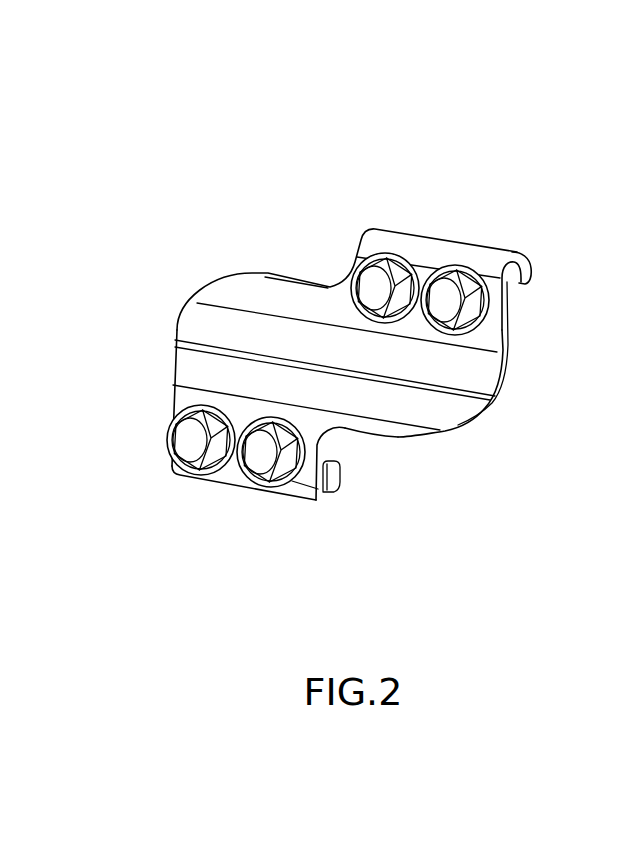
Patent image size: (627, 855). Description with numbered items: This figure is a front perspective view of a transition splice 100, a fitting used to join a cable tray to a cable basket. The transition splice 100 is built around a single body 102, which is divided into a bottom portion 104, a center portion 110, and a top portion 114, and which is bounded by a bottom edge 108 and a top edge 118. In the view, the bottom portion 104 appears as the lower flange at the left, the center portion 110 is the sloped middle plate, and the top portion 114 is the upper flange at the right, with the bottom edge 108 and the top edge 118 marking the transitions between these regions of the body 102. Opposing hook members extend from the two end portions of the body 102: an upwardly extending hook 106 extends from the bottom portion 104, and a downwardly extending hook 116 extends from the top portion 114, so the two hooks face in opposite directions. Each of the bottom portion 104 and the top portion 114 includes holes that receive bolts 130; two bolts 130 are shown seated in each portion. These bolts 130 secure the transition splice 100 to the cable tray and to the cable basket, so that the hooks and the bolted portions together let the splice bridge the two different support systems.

The transition splice 100 is at (258, 112).
The body 102 is at (177, 322).
The bottom portion 104 is at (277, 494).
The upwardly extending hook 106 is at (327, 476).
The bottom edge 108 is at (352, 428).
The center portion 110 is at (463, 375).
The top portion 114 is at (430, 238).
The downwardly extending hook 116 is at (519, 282).
The top edge 118 is at (323, 287).
The bolts 130 is at (187, 448).